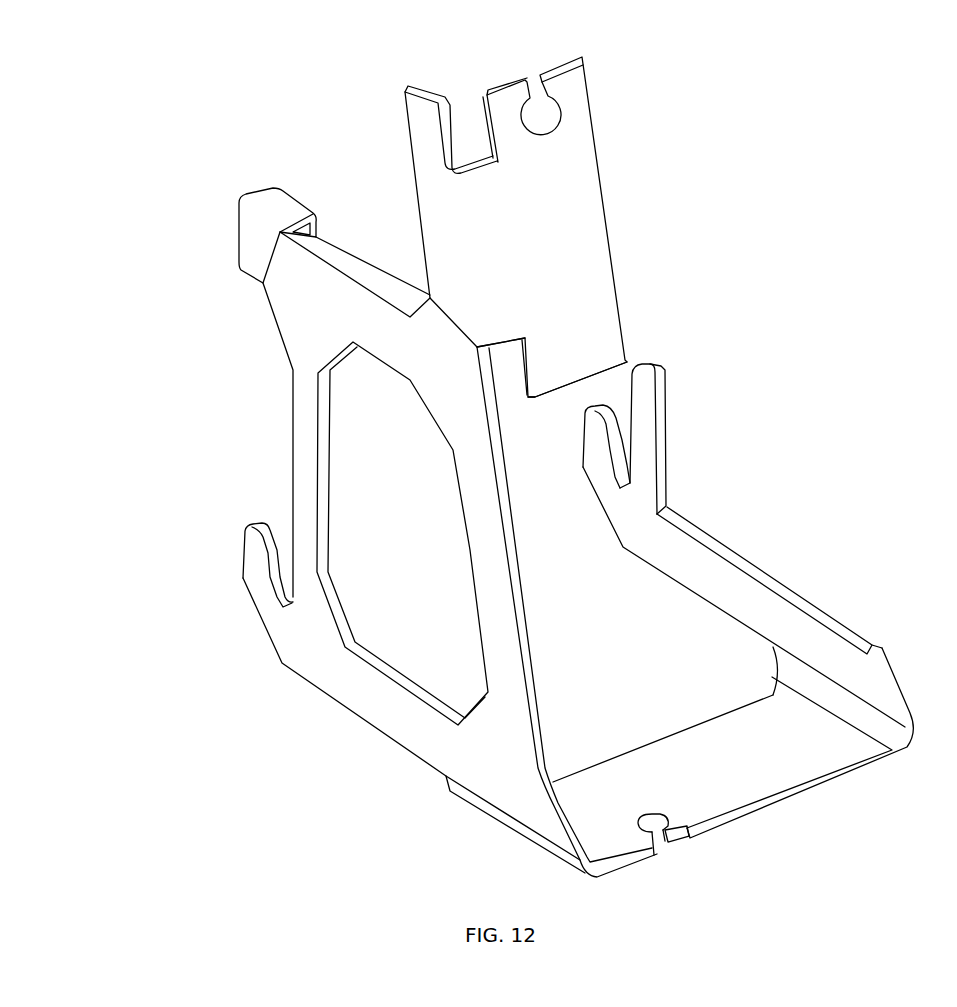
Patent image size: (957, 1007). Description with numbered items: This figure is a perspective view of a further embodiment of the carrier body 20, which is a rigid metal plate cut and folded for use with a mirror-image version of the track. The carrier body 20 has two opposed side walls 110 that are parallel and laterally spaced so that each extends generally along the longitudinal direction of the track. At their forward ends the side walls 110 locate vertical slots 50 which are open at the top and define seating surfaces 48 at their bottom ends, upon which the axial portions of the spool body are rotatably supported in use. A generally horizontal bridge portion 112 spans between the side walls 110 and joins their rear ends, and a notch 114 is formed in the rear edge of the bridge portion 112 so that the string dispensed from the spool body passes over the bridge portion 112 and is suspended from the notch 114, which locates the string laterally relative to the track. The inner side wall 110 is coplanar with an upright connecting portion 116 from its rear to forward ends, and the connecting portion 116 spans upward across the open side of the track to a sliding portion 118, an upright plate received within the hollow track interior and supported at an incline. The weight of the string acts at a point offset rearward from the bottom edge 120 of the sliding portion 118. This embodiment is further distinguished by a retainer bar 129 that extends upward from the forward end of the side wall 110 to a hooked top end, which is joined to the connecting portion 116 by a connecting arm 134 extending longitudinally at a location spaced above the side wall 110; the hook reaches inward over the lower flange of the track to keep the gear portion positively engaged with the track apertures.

The carrier body 20 is at (748, 139).
The seating surfaces 48 is at (280, 610).
The vertical slots 50 is at (268, 561).
The side walls 110 is at (392, 720).
The bridge portion 112 is at (787, 797).
The notch 114 is at (673, 843).
The connecting portion 116 is at (523, 620).
The sliding portion 118 is at (582, 238).
The bottom edge 120 is at (597, 368).
The retainer bar 129 is at (303, 415).
The connecting arm 134 is at (388, 343).